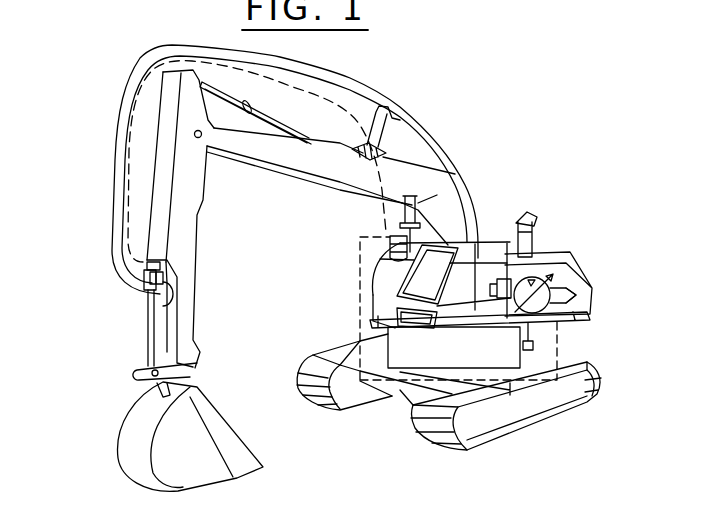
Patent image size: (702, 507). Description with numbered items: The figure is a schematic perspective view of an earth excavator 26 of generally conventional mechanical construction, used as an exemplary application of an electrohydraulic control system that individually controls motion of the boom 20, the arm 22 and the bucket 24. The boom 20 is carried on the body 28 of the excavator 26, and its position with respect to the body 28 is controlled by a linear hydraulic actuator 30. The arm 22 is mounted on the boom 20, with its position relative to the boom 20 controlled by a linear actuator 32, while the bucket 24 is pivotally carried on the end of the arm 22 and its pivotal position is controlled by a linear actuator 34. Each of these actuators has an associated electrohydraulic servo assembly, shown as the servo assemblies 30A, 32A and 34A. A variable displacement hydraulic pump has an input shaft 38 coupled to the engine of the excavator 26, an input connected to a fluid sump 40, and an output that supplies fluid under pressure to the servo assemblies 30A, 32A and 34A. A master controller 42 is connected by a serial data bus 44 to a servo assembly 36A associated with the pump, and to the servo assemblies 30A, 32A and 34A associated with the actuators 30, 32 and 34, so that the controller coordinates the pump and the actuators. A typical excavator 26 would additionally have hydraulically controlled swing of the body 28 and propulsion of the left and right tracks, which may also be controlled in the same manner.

The boom 20 is at (323, 168).
The arm 22 is at (188, 245).
The bucket 24 is at (137, 458).
The earth excavator 26 is at (520, 267).
The body 28 is at (577, 287).
The linear hydraulic actuator 30 is at (403, 214).
The electrohydraulic servo assembly 30A is at (390, 243).
The linear actuator 32 is at (280, 122).
The electrohydraulic servo assembly 32A is at (383, 157).
The linear actuator 34 is at (147, 323).
The electrohydraulic servo assembly 34A is at (163, 278).
The servo assembly 36A is at (580, 299).
The input shaft 38 is at (496, 283).
The fluid sump 40 is at (537, 343).
The master controller 42 is at (418, 364).
The serial data bus 44 is at (360, 320).